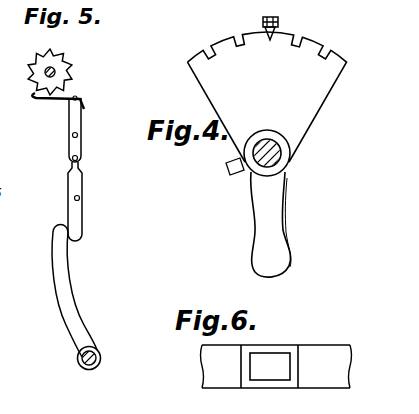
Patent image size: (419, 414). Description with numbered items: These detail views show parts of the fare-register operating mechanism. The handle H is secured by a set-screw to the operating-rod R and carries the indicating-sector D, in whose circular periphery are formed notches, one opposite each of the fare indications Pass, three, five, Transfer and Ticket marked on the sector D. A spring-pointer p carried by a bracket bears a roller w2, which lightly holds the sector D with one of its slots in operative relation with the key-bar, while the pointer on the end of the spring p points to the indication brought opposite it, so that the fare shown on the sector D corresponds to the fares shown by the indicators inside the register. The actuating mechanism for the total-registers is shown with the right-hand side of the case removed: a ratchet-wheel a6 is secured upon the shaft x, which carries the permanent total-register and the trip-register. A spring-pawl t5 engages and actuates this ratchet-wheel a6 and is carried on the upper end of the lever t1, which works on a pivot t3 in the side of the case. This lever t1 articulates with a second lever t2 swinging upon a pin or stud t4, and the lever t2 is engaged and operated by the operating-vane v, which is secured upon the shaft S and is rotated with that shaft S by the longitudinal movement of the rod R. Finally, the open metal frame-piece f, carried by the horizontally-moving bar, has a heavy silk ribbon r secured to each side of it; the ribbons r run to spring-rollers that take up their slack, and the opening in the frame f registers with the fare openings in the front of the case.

In FIG. 4, the indicating-sector D is at (312, 121).
In FIG. 4, the operating-rod R is at (290, 153).
In FIG. 4, the handle H is at (282, 233).
In FIG. 4, the roller w2 is at (262, 22).
In FIG. 4, the spring-pointer p is at (269, 39).
In FIG. 5, the shaft x is at (36, 75).
In FIG. 5, the ratchet-wheel a6 is at (73, 68).
In FIG. 5, the spring-pawl t5 is at (57, 103).
In FIG. 5, the lever t1 is at (81, 119).
In FIG. 5, the pivot t3 is at (78, 136).
In FIG. 5, the second lever t2 is at (81, 222).
In FIG. 5, the pin or stud t4 is at (80, 198).
In FIG. 5, the operating-vane v is at (70, 281).
In FIG. 5, the shaft S is at (95, 349).
In FIG. 6, the silk ribbon r is at (276, 366).
In FIG. 6, the frame-piece f is at (265, 387).